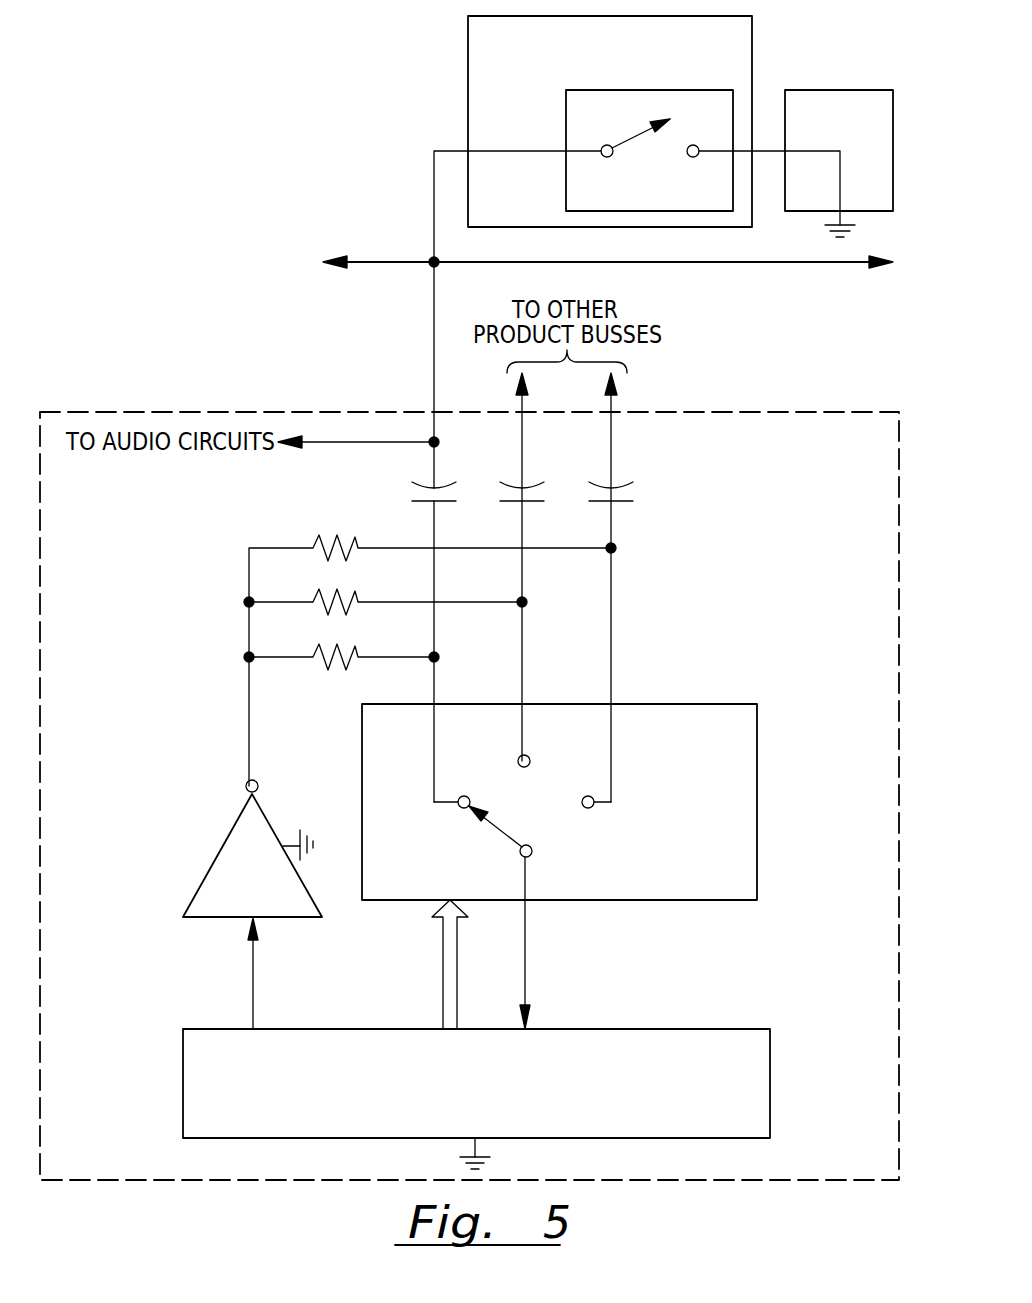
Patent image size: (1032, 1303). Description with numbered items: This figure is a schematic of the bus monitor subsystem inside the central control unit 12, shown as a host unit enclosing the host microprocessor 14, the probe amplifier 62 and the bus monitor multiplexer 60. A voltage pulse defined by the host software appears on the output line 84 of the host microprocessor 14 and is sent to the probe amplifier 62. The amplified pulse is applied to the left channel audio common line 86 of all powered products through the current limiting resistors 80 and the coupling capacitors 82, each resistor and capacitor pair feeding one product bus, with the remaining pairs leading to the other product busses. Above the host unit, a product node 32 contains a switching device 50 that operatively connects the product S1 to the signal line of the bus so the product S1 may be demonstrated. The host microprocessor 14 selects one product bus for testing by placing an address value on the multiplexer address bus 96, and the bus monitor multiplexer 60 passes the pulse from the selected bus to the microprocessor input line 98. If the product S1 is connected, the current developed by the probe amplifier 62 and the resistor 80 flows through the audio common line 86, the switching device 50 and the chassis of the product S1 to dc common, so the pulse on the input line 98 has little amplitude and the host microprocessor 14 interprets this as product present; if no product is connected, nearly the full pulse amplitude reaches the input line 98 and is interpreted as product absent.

The central control unit 12 is at (299, 408).
The node 32 is at (468, 116).
The switching device 50 is at (626, 89).
The product S1 is at (857, 89).
The left channel audio common line 86 is at (752, 262).
The coupling capacitors 82 is at (437, 483).
The current limiting resistors 80 is at (355, 562).
The bus monitor multiplexer 60 is at (427, 874).
The probe amplifier 62 is at (223, 842).
The output line 84 is at (253, 1002).
The multiplexer address bus 96 is at (442, 990).
The microprocessor input line 98 is at (525, 955).
The host microprocessor 14 is at (708, 1123).